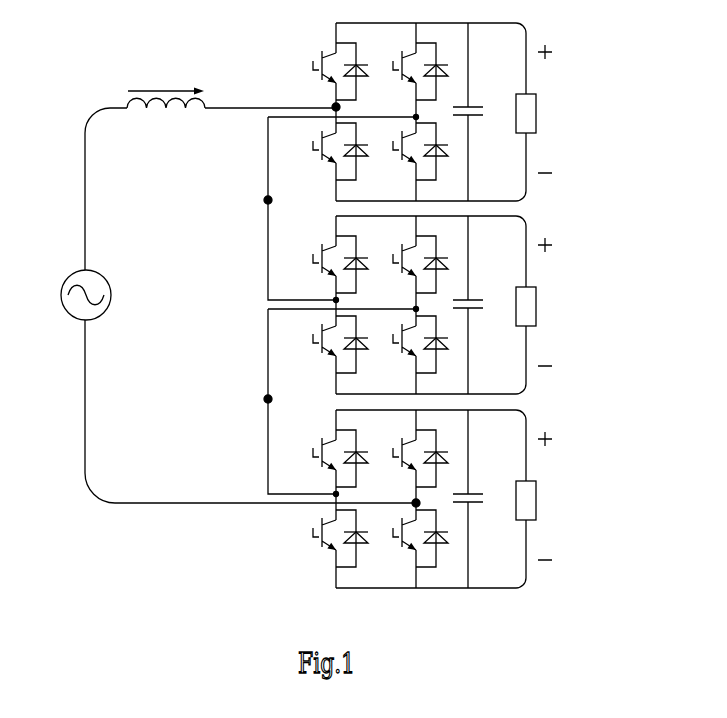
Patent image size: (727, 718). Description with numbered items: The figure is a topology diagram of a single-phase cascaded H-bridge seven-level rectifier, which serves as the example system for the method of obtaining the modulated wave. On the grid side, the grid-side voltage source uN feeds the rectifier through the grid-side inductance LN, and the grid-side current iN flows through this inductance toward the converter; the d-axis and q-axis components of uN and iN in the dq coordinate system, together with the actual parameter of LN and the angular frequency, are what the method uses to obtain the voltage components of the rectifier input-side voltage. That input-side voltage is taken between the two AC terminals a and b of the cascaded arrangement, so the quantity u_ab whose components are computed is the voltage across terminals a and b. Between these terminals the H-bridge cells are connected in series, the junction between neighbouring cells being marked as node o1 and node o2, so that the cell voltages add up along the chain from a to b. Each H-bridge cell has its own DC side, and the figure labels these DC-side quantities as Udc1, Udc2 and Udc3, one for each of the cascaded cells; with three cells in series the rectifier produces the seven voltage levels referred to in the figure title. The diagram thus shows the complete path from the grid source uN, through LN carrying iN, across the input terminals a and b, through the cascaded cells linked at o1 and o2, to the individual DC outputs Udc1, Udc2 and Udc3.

The grid-side inductance LN is at (166, 124).
The grid-side current iN is at (166, 75).
The grid-side voltage uN is at (100, 285).
The input-side terminal a is at (354, 102).
The input-side terminal b is at (405, 489).
The intermediate connection node o1 is at (254, 208).
The intermediate connection node o2 is at (254, 413).
The DC-side voltage/load of first H-bridge cell Udc1 is at (558, 109).
The DC-side voltage/load of second H-bridge cell Udc2 is at (558, 302).
The DC-side voltage/load of third H-bridge cell Udc3 is at (558, 496).